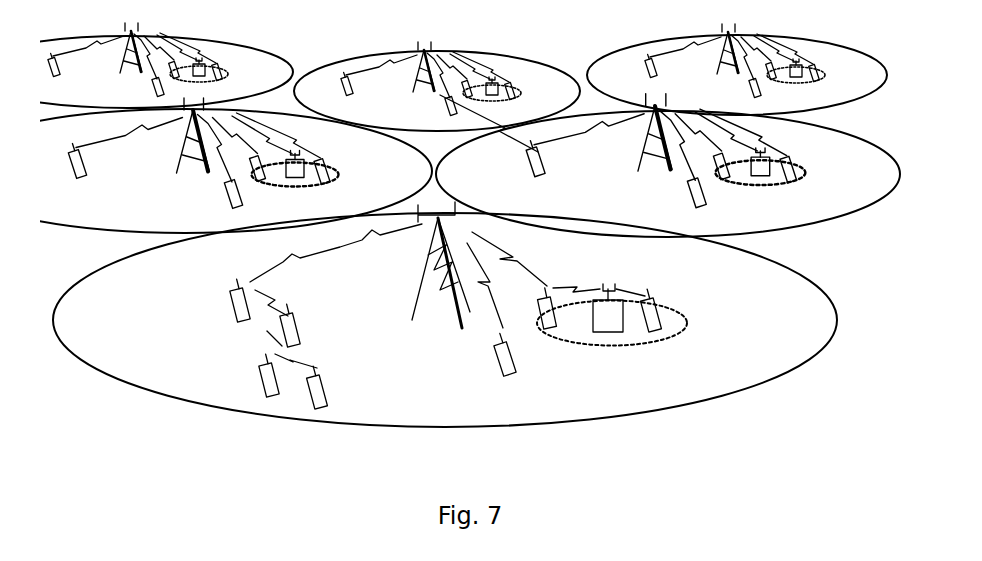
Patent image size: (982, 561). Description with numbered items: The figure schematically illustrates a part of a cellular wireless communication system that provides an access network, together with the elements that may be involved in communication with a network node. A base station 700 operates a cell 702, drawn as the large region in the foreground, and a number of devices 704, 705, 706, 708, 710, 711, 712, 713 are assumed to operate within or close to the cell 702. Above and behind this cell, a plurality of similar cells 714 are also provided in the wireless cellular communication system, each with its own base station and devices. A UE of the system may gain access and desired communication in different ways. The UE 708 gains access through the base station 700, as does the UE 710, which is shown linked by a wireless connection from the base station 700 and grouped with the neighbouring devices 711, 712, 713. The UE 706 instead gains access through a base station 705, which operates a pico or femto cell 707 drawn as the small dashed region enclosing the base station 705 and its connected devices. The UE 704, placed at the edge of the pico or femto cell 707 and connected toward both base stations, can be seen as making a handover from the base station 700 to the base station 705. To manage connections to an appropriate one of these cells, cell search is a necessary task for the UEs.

The base station 700 is at (421, 322).
The cell 702 is at (370, 312).
The UE 704 is at (543, 327).
The base station 705 is at (610, 316).
The UE 706 is at (657, 328).
The pico or femto cell 707 is at (616, 344).
The UE 708 is at (500, 372).
The UE 710 is at (237, 316).
The device 711 is at (283, 337).
The device 712 is at (260, 380).
The device 713 is at (309, 395).
The similar cells 714 is at (803, 233).